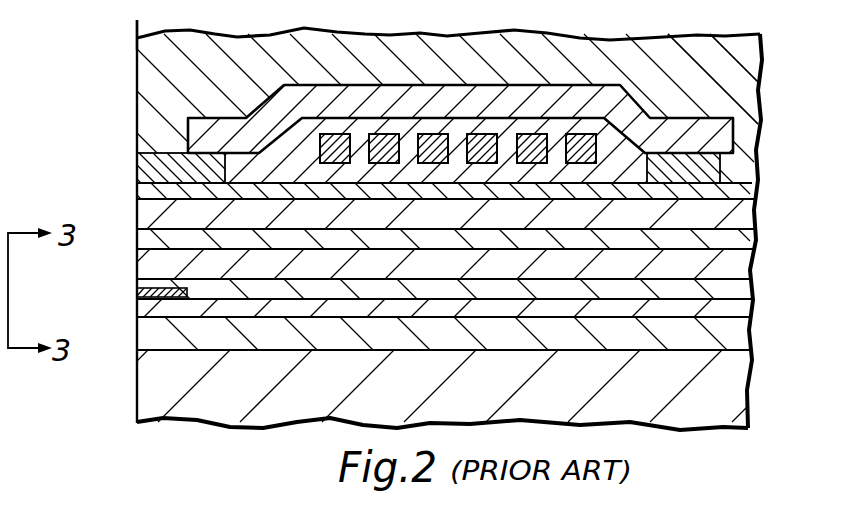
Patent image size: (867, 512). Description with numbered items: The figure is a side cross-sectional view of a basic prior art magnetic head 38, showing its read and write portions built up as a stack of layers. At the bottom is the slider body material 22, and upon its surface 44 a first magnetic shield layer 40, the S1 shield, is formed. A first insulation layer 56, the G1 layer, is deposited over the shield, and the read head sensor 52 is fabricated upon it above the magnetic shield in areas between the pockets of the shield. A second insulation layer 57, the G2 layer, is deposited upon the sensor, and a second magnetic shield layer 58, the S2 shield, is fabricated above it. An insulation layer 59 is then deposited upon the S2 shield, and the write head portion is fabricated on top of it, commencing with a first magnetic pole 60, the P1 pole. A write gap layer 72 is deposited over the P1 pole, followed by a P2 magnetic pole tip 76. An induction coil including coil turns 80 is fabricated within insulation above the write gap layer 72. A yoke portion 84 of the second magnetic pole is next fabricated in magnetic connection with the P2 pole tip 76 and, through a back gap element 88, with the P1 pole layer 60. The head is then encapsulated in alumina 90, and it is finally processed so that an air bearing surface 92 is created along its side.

The slider body material 22 is at (500, 396).
The magnetic head 38 is at (126, 67).
The first magnetic shield layer 40 is at (732, 338).
The surface 44 is at (276, 348).
The read head sensor 52 is at (137, 293).
The first insulation layer 56 is at (137, 306).
The second insulation layer 57 is at (145, 284).
The second magnetic shield layer 58 is at (740, 266).
The insulation layer 59 is at (745, 240).
The first magnetic pole 60 is at (137, 212).
The write gap layer 72 is at (137, 190).
The P2 magnetic pole tip 76 is at (137, 163).
The coil turns 80 is at (477, 134).
The yoke portion 84 is at (330, 92).
The back gap element 88 is at (712, 178).
The alumina 90 is at (703, 88).
The air bearing surface 92 is at (135, 102).